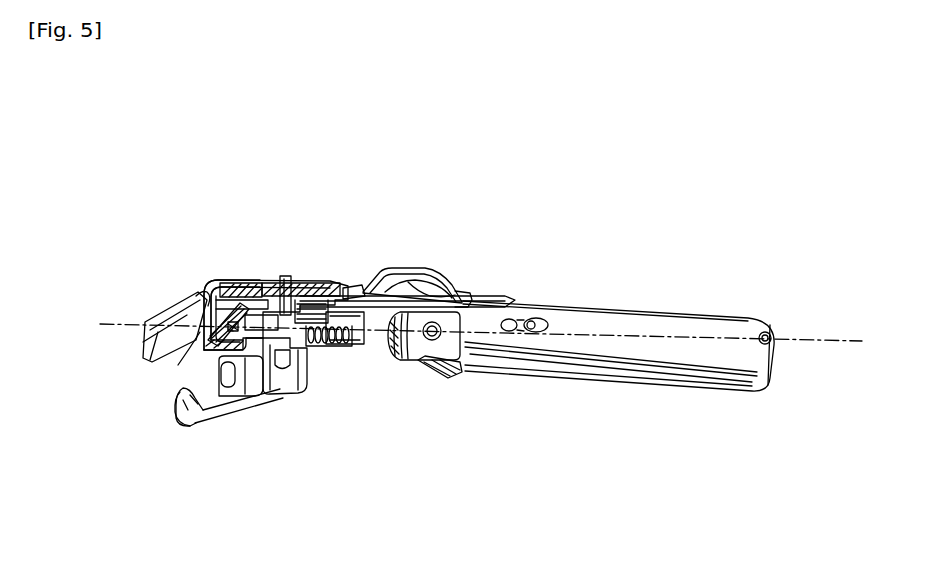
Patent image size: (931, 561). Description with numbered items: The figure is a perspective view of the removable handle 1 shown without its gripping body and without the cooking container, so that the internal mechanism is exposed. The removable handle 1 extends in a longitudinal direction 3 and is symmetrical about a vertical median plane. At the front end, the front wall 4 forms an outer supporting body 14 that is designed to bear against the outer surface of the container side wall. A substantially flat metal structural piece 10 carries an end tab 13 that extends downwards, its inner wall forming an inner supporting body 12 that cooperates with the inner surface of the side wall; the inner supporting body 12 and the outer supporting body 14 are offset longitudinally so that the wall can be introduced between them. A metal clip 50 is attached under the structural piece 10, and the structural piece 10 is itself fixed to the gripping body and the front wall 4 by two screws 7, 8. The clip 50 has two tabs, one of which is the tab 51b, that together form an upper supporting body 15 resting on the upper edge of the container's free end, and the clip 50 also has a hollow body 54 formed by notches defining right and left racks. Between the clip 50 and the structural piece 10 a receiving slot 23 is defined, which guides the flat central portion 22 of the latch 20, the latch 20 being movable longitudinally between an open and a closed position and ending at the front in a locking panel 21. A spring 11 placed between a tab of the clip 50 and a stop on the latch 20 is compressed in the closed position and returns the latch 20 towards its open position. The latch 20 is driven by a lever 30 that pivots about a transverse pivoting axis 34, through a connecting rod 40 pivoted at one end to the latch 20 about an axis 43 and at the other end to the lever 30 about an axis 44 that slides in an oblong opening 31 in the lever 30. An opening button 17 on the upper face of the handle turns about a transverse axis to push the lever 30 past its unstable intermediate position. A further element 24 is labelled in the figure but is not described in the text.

The removable handle 1 is at (128, 196).
The longitudinal direction 3 is at (838, 342).
The front wall 4 is at (190, 427).
The screw 7 is at (307, 280).
The screw 8 is at (250, 353).
The structural piece 10 is at (392, 290).
The spring 11 is at (325, 346).
The inner supporting body 12 is at (187, 350).
The end tab 13 is at (170, 348).
The outer supporting body 14 is at (193, 430).
The upper supporting body 15 is at (227, 280).
The opening button 17 is at (417, 267).
The latch 20 is at (247, 280).
The locking panel 21 is at (202, 293).
The central portion 22 is at (363, 307).
The receiving slot 23 is at (343, 290).
The guide block 24 is at (273, 277).
The lever 30 is at (633, 343).
The oblong opening 31 is at (521, 312).
The pivoting axis 34 is at (760, 392).
The connecting rod 40 is at (442, 360).
The axis 43 is at (450, 377).
The axis 44 is at (545, 350).
The clip 50 is at (322, 347).
The tab 51b is at (235, 287).
The hollow body 54 is at (308, 385).